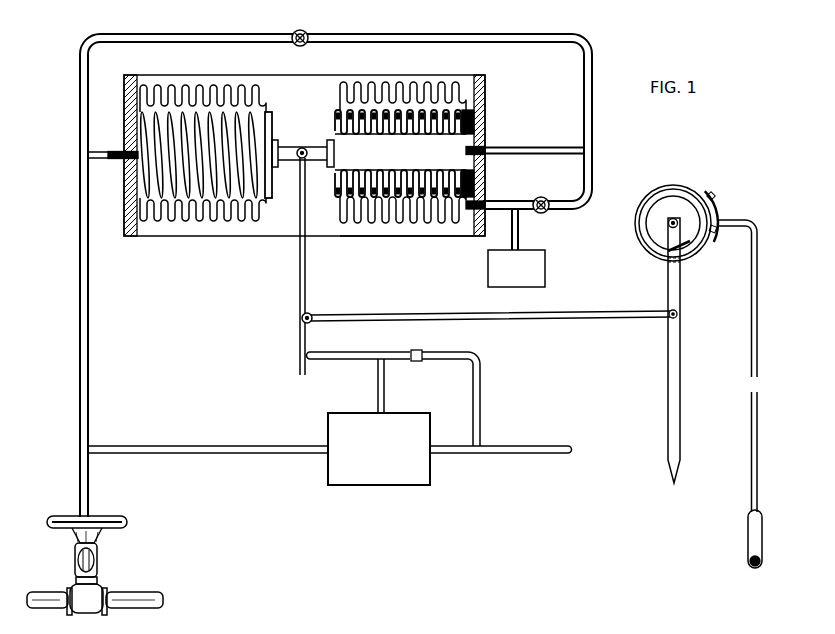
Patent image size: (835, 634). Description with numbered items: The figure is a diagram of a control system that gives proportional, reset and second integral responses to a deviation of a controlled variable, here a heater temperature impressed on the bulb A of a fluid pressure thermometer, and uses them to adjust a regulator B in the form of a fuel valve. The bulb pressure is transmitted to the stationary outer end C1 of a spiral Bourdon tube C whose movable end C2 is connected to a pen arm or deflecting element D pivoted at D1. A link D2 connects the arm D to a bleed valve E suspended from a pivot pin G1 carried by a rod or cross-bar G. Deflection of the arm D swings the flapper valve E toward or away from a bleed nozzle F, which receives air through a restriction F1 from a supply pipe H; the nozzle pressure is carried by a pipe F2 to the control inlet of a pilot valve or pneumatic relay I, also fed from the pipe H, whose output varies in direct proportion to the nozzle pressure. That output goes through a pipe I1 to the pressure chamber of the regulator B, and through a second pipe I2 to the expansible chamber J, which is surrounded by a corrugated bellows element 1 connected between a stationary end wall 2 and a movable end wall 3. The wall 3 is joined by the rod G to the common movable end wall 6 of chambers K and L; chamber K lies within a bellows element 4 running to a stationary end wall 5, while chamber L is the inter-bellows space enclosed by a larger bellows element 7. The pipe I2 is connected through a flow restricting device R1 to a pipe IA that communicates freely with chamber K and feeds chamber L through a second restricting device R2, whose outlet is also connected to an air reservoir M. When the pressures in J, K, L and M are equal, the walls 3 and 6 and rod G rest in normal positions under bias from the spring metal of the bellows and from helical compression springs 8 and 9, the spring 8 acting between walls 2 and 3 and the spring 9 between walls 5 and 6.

The corrugated tubular bellows element 1 is at (192, 226).
The stationary end wall 2 is at (124, 203).
The movable end wall 3 is at (272, 182).
The corrugated tubular bellows element 4 is at (341, 113).
The stationary end wall 5 is at (480, 101).
The common movable end wall 6 is at (333, 178).
The corrugated tubular bellows element 7 is at (409, 86).
The helical compression spring 8 is at (252, 114).
The helical compression spring 9 is at (357, 194).
The pipe IA is at (584, 94).
The flow restricting device R1 is at (301, 30).
The flow restricting device R2 is at (544, 197).
The rod or cross-bar G is at (289, 150).
The pivot pin G1 is at (302, 148).
The expansible pressure chamber J is at (260, 203).
The expansible air chamber K is at (458, 140).
The expansible air chamber L is at (410, 225).
The air reservoir M is at (538, 269).
The bleed valve E is at (299, 284).
The link D2 is at (576, 314).
The bleed nozzle F is at (344, 354).
The restriction F1 is at (420, 352).
The pipe F2 is at (384, 395).
The pilot valve or pneumatic relay I is at (375, 470).
The pipe H is at (538, 450).
The pipe I1 is at (90, 486).
The pipe I2 is at (90, 411).
The regulator B is at (94, 597).
The Bourdon tube C is at (675, 187).
The stationary outer end of Bourdon tube C1 is at (713, 195).
The movable end of Bourdon tube C2 is at (682, 252).
The pen arm or deflecting element D is at (676, 356).
The pivot D1 is at (668, 224).
The bulb A is at (755, 537).